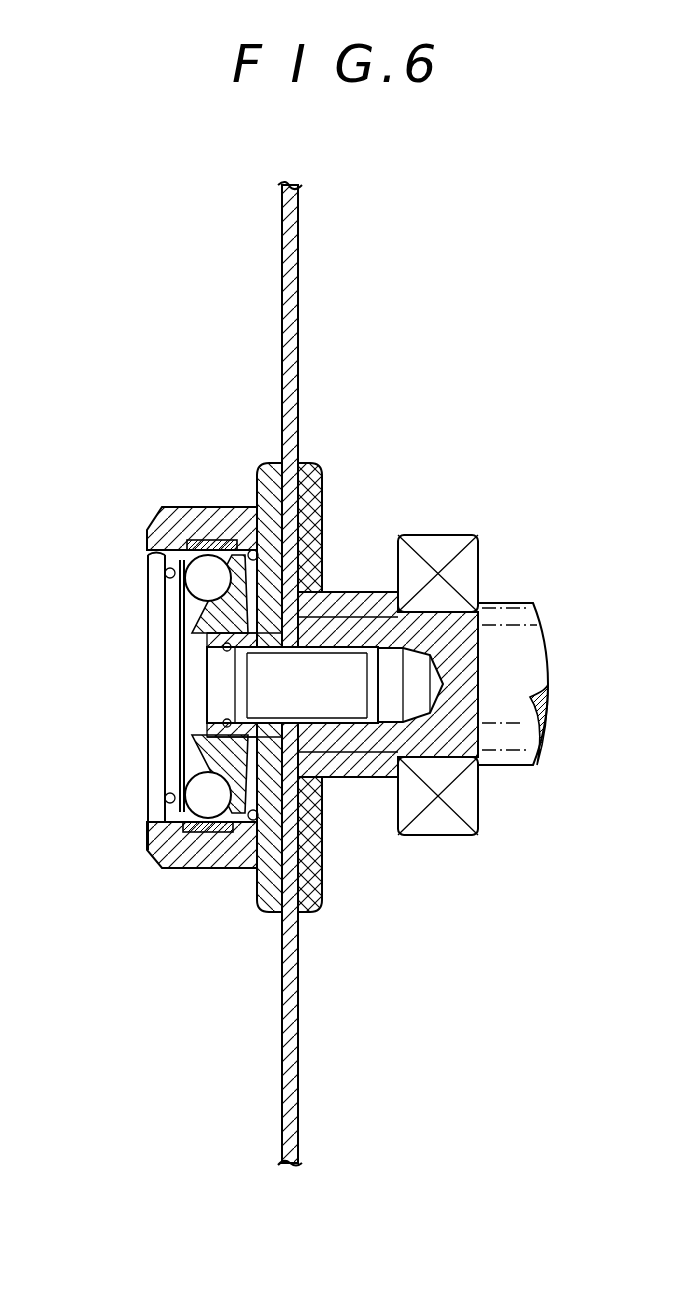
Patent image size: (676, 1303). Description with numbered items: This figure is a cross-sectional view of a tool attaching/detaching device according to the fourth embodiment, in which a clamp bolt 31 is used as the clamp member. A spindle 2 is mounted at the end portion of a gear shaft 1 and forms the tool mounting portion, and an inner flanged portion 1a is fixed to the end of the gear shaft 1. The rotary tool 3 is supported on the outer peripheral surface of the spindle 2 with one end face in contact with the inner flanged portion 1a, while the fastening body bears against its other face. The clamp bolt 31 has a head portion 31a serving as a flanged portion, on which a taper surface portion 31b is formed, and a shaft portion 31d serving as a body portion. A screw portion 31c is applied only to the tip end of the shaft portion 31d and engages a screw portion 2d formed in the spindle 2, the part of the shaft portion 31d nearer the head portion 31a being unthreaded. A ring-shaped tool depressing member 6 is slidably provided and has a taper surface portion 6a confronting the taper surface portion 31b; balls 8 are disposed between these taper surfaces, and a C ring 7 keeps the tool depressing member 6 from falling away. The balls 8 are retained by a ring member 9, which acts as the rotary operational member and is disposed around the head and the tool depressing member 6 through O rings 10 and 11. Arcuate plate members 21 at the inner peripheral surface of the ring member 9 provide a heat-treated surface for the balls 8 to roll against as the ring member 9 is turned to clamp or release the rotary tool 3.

The gear shaft 1 is at (508, 610).
The inner flanged portion 1a is at (322, 862).
The spindle 2 is at (348, 752).
The screw portion 2d is at (326, 668).
The rotary tool 3 is at (290, 1010).
The tool depressing member 6 is at (272, 490).
The taper surface portion 6a is at (258, 553).
The C ring 7 is at (208, 820).
The balls 8 is at (150, 545).
The ring member 9 is at (178, 505).
The O ring 10 is at (165, 573).
The O ring 11 is at (323, 477).
The arcuate plate member 21 is at (218, 540).
The clamp bolt 31 is at (274, 668).
The head portion 31a is at (158, 760).
The taper surface portion 31b is at (190, 620).
The screw portion 31c is at (400, 612).
The shaft portion 31d is at (215, 683).